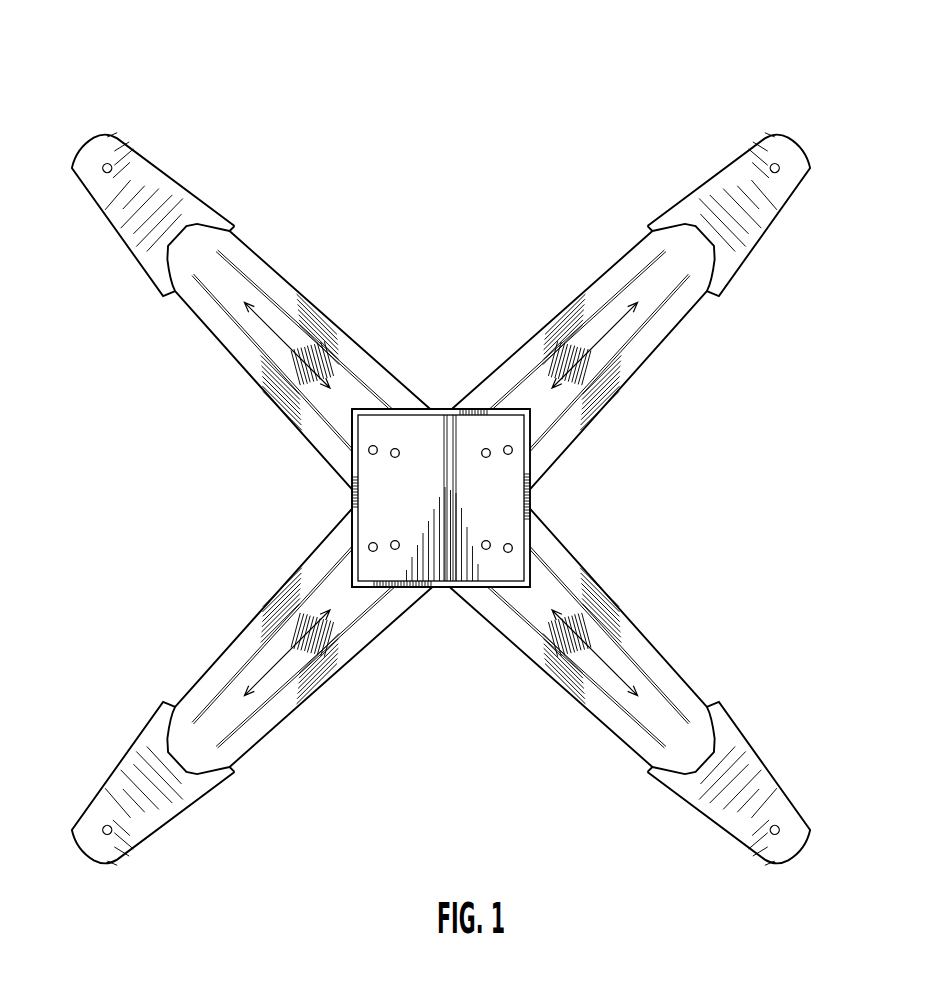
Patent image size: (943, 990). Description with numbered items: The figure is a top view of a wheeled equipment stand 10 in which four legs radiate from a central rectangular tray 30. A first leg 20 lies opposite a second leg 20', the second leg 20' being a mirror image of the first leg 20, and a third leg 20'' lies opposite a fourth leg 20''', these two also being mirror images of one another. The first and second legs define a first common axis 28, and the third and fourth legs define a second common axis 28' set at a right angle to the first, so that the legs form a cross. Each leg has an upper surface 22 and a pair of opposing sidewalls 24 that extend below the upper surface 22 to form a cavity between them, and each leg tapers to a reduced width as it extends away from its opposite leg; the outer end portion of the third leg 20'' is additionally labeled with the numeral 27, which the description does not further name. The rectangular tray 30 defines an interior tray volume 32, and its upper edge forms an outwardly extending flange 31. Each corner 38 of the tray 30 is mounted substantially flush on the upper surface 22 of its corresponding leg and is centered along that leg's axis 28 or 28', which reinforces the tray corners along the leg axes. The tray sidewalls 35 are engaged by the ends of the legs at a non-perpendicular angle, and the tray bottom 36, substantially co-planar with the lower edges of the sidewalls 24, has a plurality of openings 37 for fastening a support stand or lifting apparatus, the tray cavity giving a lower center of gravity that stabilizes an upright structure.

The wheeled equipment stand 10 is at (441, 456).
The first leg 20 is at (242, 300).
The second leg 20' is at (639, 697).
The third leg 20'' is at (638, 303).
The fourth leg 20''' is at (242, 697).
The upper surface 22 is at (600, 355).
The opposing sidewalls 24 is at (333, 325).
The end attachment plate 27 is at (718, 258).
The first common axis 28 is at (447, 470).
The second common axis 28' is at (441, 515).
The rectangular tray 30 is at (440, 408).
The flange 31 is at (446, 590).
The interior tray volume 32 is at (406, 499).
The tray sidewalls 35 is at (351, 497).
The tray bottom 36 is at (388, 502).
The openings 37 is at (511, 453).
The corner 38 is at (350, 587).